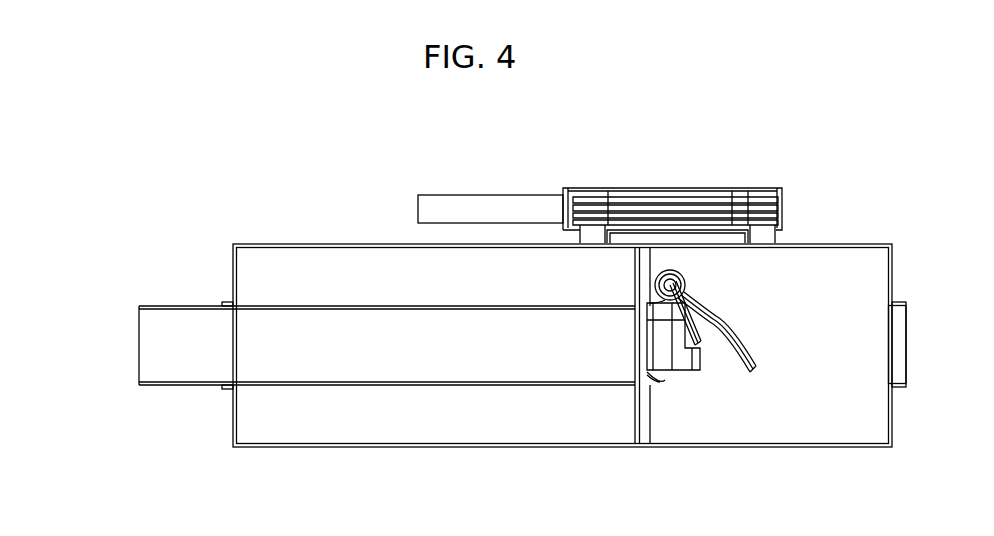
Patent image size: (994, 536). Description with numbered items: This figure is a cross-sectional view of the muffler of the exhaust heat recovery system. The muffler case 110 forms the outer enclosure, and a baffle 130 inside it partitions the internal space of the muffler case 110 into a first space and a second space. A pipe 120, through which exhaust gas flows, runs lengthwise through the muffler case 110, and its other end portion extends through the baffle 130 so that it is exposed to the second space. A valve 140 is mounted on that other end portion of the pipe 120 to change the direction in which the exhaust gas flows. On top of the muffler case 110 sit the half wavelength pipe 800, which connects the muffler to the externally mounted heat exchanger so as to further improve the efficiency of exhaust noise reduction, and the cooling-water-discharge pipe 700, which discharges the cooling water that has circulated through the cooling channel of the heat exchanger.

The muffler case 110 is at (410, 432).
The pipe 120 is at (160, 346).
The baffle 130 is at (640, 437).
The valve 140 is at (748, 345).
The cooling-water-discharge pipe 700 is at (482, 203).
The half wavelength pipe 800 is at (591, 236).